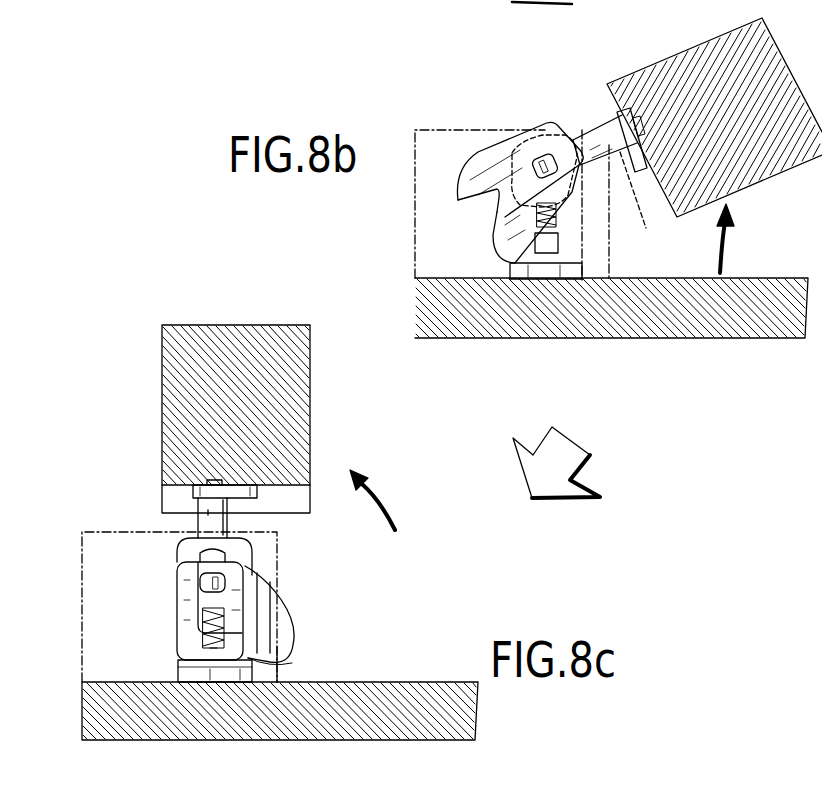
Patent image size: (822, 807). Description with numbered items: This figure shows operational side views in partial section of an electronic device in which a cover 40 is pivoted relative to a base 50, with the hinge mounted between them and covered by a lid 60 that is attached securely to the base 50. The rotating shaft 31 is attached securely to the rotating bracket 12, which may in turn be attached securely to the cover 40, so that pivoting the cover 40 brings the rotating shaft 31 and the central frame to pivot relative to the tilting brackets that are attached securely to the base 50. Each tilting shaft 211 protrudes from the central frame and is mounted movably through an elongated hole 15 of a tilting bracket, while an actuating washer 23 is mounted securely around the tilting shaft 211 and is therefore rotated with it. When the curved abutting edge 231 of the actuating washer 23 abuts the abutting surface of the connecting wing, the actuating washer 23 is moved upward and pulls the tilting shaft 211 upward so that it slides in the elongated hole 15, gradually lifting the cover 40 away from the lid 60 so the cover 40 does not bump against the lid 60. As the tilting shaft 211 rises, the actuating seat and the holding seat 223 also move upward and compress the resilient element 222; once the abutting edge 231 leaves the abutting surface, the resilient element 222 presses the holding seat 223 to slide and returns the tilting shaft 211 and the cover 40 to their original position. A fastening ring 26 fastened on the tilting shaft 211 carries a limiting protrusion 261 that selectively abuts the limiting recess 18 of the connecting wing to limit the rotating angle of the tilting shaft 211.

In FIG. 8b, the rotating bracket 12 is at (618, 110).
In FIG. 8c, the rotating bracket 12 is at (252, 497).
In FIG. 8b, the elongated hole 15 is at (497, 212).
In FIG. 8c, the elongated hole 15 is at (203, 558).
In FIG. 8b, the limiting recess 18 is at (528, 273).
In FIG. 8c, the limiting recess 18 is at (172, 672).
In FIG. 8c, the actuating washer 23 is at (277, 630).
In FIG. 8b, the fastening ring 26 is at (482, 173).
In FIG. 8c, the fastening ring 26 is at (192, 592).
In FIG. 8b, the rotating shaft 31 is at (597, 133).
In FIG. 8c, the rotating shaft 31 is at (203, 527).
In FIG. 8c, the cover 40 is at (295, 393).
In FIG. 8b, the base 50 is at (712, 322).
In FIG. 8c, the base 50 is at (128, 722).
In FIG. 8b, the lid 60 is at (467, 128).
In FIG. 8c, the lid 60 is at (105, 578).
In FIG. 8b, the tilting shaft 211 is at (540, 157).
In FIG. 8c, the tilting shaft 211 is at (217, 582).
In FIG. 8b, the resilient element 222 is at (553, 220).
In FIG. 8c, the resilient element 222 is at (200, 630).
In FIG. 8b, the holding seat 223 is at (557, 235).
In FIG. 8b, the abutting edge 231 is at (497, 265).
In FIG. 8c, the abutting edge 231 is at (292, 663).
In FIG. 8b, the limiting protrusion 261 is at (415, 204).
In FIG. 8c, the limiting protrusion 261 is at (217, 648).